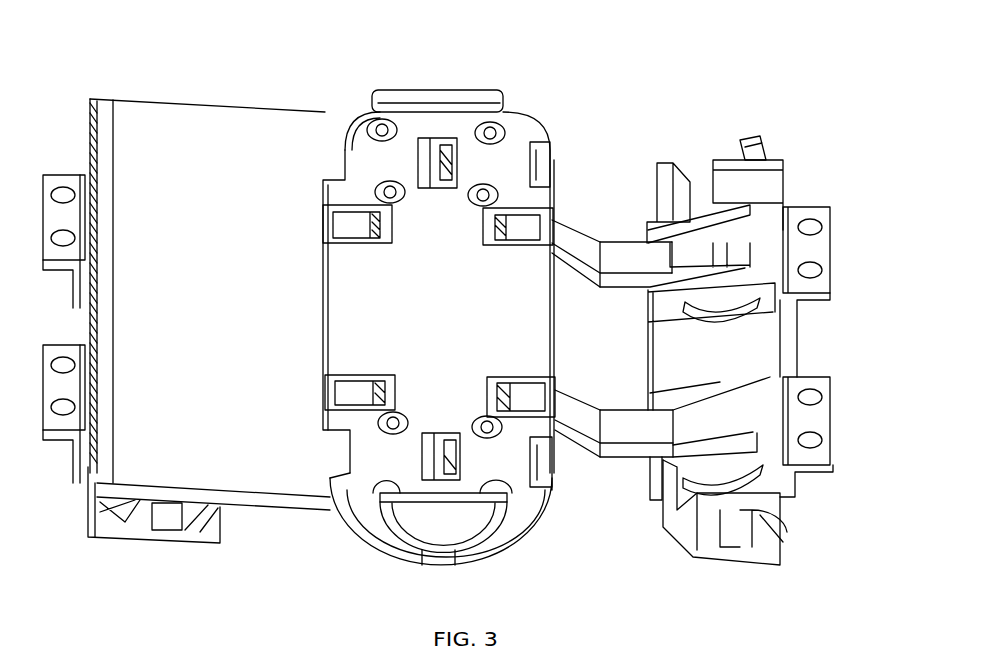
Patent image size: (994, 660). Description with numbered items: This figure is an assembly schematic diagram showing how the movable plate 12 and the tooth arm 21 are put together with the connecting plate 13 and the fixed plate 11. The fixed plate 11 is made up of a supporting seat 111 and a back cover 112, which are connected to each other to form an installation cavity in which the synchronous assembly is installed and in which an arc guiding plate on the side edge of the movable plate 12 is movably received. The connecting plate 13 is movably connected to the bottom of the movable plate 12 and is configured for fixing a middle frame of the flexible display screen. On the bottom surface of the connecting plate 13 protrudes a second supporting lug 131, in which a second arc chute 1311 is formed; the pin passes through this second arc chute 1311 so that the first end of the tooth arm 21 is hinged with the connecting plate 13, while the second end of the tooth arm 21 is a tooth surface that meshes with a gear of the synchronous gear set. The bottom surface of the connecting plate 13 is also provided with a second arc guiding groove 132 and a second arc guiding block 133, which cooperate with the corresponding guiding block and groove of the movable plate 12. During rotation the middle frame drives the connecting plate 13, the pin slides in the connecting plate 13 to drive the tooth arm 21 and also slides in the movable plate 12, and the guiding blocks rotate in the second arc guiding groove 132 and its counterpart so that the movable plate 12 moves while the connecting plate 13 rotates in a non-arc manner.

The fixed plate 11 is at (377, 53).
The supporting seat 111 is at (466, 150).
The back cover 112 is at (350, 107).
The movable plate 12 is at (215, 148).
The connecting plate 13 is at (137, 523).
The tooth arm 21 is at (572, 247).
The second supporting lug 131 is at (730, 293).
The second arc chute 1311 is at (730, 307).
The second arc guiding groove 132 is at (690, 198).
The second arc guiding block 133 is at (768, 152).